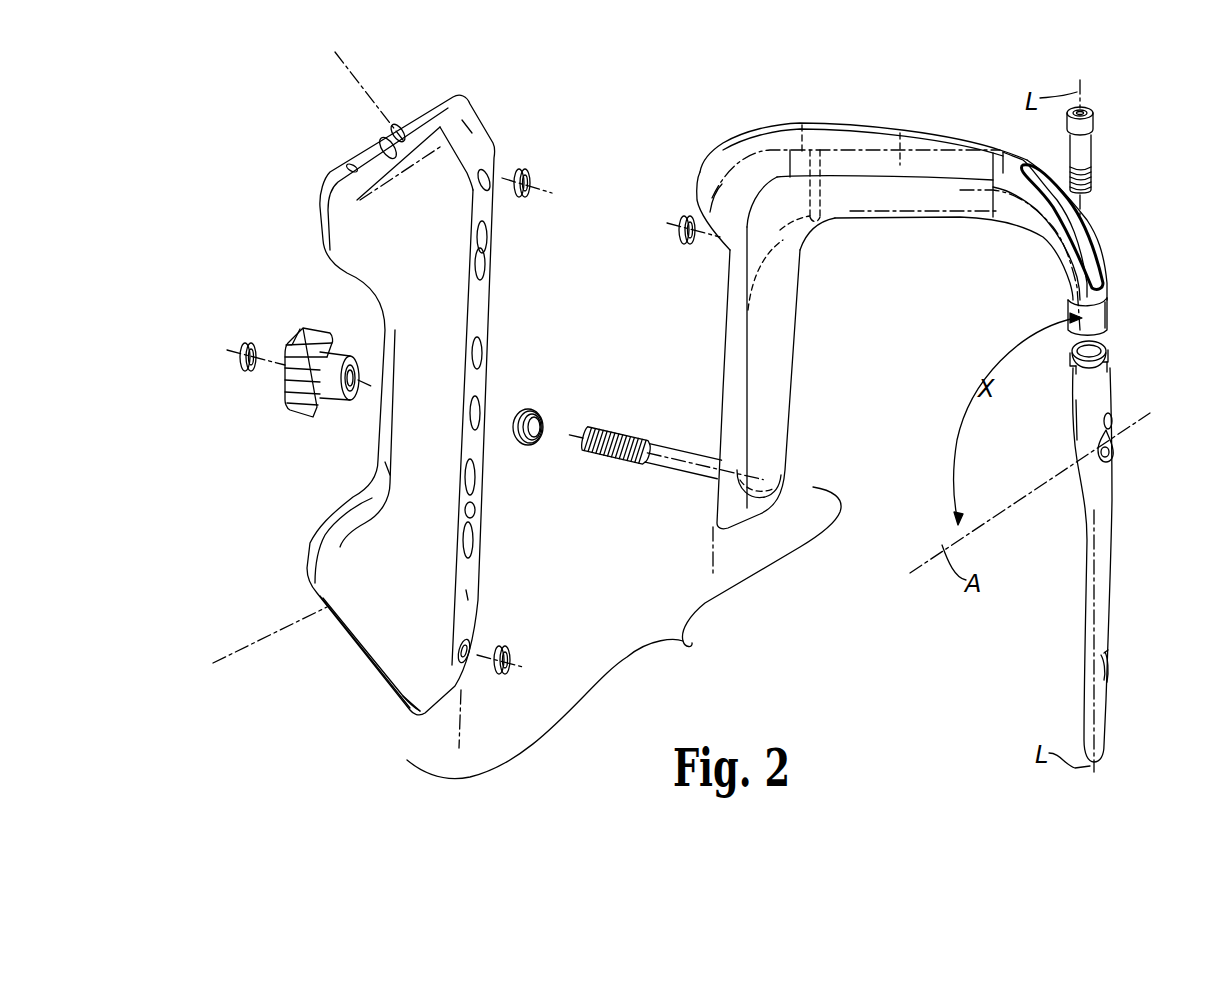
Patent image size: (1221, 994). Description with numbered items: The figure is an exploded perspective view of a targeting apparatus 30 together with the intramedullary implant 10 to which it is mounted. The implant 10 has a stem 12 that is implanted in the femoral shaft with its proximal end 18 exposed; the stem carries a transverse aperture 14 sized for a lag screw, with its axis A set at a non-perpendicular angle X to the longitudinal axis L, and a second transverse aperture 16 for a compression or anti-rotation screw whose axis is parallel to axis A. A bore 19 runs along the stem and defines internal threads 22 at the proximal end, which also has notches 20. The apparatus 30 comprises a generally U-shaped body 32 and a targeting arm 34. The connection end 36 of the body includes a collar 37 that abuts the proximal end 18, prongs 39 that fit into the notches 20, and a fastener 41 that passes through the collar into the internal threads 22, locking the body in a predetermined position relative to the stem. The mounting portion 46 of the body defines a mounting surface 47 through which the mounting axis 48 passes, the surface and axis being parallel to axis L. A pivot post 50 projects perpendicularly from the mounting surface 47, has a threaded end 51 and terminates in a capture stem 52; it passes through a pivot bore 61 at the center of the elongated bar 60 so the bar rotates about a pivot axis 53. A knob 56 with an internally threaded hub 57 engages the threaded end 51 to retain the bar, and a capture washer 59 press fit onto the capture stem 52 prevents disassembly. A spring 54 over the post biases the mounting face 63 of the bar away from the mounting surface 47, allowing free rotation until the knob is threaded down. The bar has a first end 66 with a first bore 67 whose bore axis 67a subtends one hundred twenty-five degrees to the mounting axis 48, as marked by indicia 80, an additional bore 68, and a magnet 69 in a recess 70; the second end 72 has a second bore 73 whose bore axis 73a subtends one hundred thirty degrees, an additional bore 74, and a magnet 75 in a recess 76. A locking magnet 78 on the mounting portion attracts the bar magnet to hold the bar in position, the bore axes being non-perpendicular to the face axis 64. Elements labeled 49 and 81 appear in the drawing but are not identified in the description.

The intramedullary implant 10 is at (1113, 542).
The stem 12 is at (1108, 555).
The transverse aperture 14 is at (1115, 450).
The second transverse aperture 16 is at (1114, 420).
The proximal end 18 is at (1073, 366).
The bore 19 is at (1107, 343).
The notches 20 is at (1072, 346).
The internal threads 22 is at (1075, 407).
The targeting apparatus 30 is at (624, 633).
The body 32 is at (886, 222).
The targeting arm 34 is at (483, 297).
The connection end 36 is at (1105, 282).
The collar 37 is at (1068, 313).
The prongs 39 is at (1112, 316).
The fastener 41 is at (1095, 146).
The mounting portion 46 is at (777, 380).
The mounting surface 47 is at (726, 324).
The mounting axis 48 is at (713, 553).
The top surface of arm 49 is at (884, 192).
The pivot post 50 is at (663, 444).
The threaded end 51 is at (616, 431).
The capture stem 52 is at (583, 430).
The pivot axis 53 is at (770, 460).
The spring 54 is at (531, 447).
The knob 56 is at (310, 323).
The internally threaded hub 57 is at (331, 405).
The capture washer 59 is at (250, 342).
The elongated bar 60 is at (390, 469).
The pivot bore 61 is at (483, 410).
The mounting face 63 is at (468, 598).
The face axis 64 is at (462, 724).
The first end 66 is at (365, 657).
The first bore 67 is at (475, 547).
The bore axis 67a is at (262, 638).
The additional bore 68 is at (477, 512).
The magnet 69 is at (508, 650).
The recess 70 is at (470, 650).
The second end 72 is at (463, 126).
The second bore 73 is at (399, 130).
The bore axis 73a is at (340, 67).
The additional bore 74 is at (388, 147).
The magnet 75 is at (527, 172).
The recess 76 is at (491, 176).
The locking magnet 78 is at (686, 216).
The indicia 80 is at (400, 692).
The plate face 81 is at (425, 233).